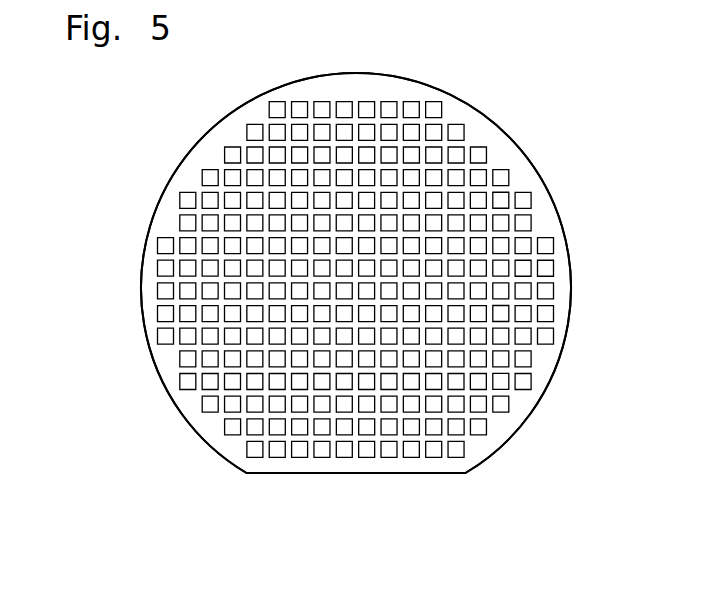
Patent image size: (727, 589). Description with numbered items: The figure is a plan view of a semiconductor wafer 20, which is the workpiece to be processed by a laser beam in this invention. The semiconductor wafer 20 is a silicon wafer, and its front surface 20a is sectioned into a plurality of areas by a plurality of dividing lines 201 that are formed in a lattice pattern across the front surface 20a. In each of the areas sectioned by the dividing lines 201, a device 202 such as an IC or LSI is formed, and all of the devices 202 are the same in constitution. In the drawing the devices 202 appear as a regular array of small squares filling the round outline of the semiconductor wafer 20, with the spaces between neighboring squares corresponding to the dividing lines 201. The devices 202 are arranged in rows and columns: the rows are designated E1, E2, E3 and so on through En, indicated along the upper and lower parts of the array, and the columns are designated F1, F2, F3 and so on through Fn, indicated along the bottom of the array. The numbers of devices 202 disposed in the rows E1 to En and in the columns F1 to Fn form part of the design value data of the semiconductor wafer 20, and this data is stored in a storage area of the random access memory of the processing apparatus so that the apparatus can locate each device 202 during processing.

The semiconductor wafer 20 is at (516, 76).
The front surface 20a is at (168, 213).
The dividing line 201 is at (349, 325).
The device 202 is at (165, 292).
The row E1 is at (448, 110).
The row E2 is at (467, 133).
The row E3 is at (490, 157).
The row En is at (468, 450).
The column F1 is at (546, 352).
The column F2 is at (523, 397).
The column F3 is at (502, 420).
The column Fn is at (485, 541).